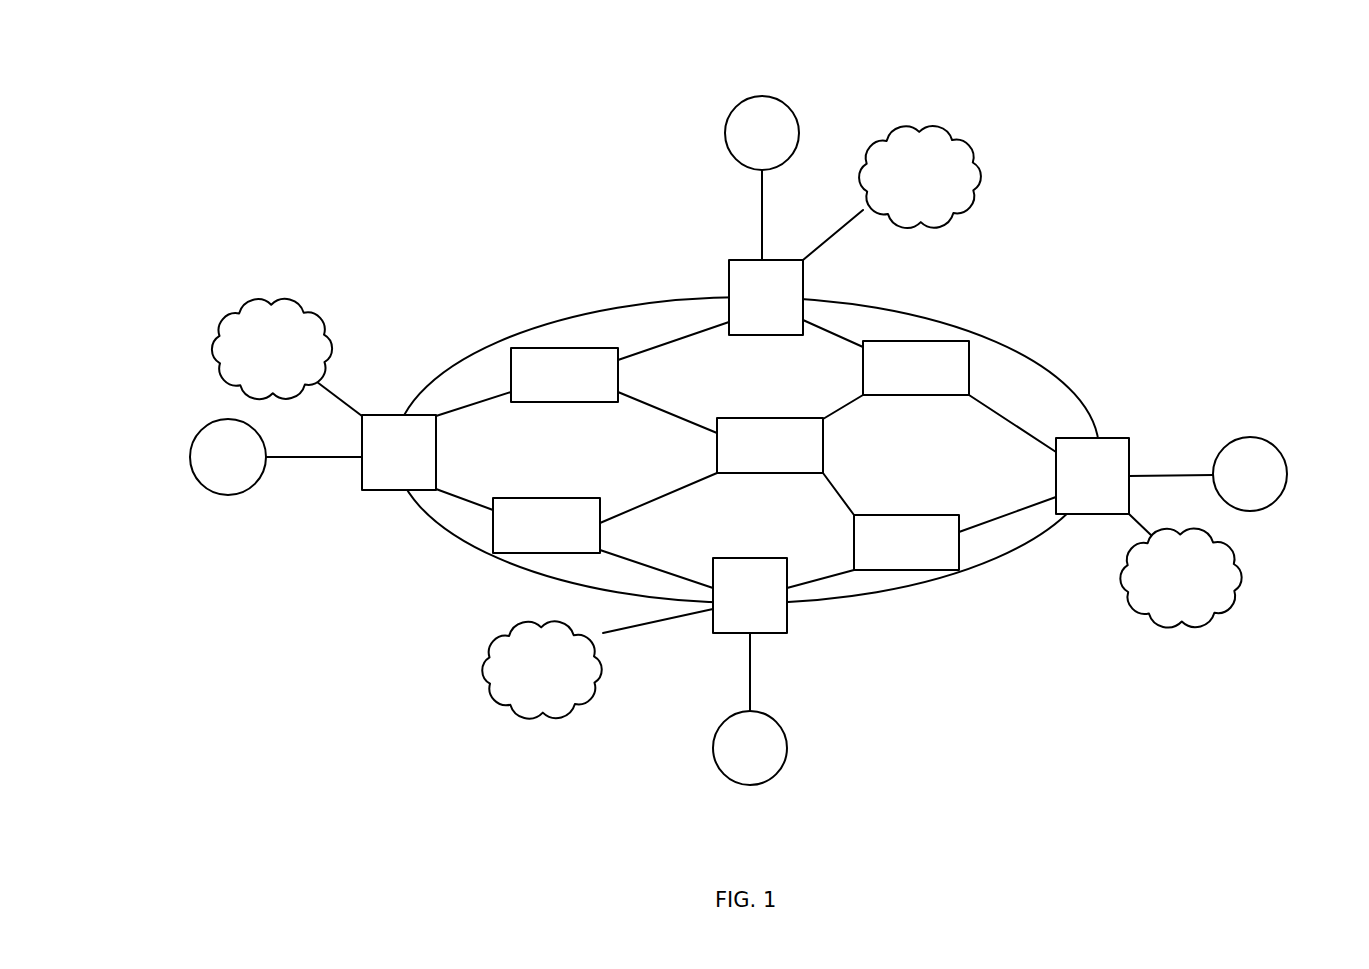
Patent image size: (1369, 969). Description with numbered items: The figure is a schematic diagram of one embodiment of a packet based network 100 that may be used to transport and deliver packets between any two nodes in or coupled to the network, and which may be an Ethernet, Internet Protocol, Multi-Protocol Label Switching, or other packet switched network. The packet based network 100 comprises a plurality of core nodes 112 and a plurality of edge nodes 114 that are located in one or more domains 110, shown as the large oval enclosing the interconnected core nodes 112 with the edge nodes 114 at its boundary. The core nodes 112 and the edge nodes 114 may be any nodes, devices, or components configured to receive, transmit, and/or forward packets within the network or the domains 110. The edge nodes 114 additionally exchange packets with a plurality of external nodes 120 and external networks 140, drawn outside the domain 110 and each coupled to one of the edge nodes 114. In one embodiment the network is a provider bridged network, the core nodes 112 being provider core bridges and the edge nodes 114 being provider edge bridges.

The packet based network 100 is at (226, 77).
The domain 110 is at (965, 572).
The core node 112 is at (540, 402).
The edge node 114 is at (747, 335).
The external node 120 is at (760, 97).
The external network 140 is at (977, 193).